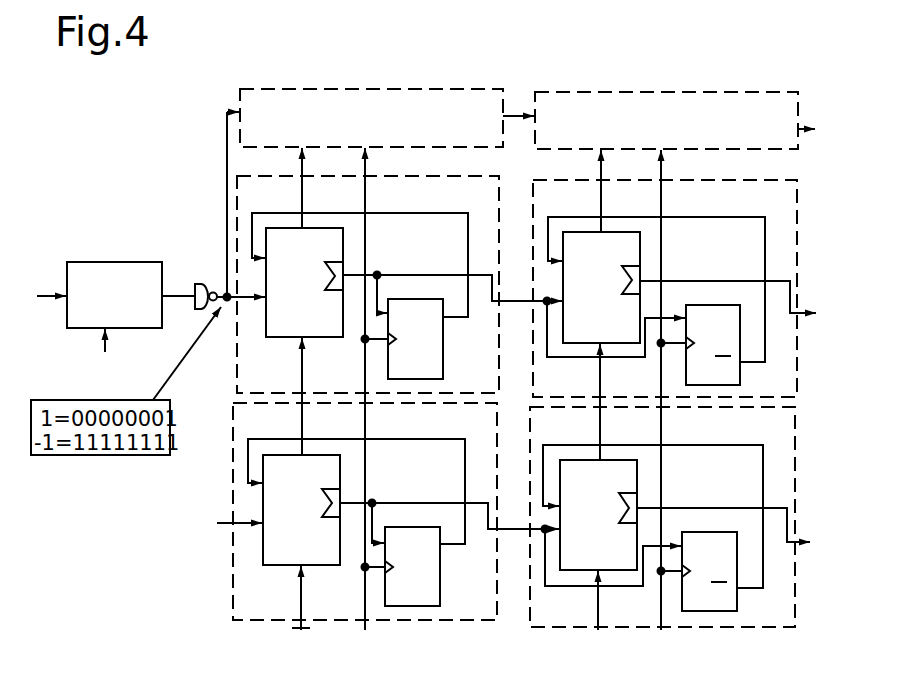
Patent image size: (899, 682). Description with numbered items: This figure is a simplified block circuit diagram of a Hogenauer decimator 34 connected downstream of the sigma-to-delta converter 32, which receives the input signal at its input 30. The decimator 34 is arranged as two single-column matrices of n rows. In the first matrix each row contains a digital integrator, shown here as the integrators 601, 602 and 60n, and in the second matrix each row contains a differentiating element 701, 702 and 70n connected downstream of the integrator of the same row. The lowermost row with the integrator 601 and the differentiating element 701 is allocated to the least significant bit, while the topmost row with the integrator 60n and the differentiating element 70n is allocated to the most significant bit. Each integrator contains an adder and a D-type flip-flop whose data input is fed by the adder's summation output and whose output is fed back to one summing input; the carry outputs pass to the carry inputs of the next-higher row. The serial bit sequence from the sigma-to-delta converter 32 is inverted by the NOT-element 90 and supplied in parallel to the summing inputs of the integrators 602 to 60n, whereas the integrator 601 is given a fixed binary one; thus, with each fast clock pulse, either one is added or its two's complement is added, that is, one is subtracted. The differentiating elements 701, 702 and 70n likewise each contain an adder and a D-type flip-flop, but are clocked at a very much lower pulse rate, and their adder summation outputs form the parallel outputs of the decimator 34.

The input signal line S1 30 is at (45, 297).
The sigma-to-delta converter 32 is at (101, 262).
The decimator 34 is at (528, 78).
The digital integrator 60n is at (239, 88).
The digital integrator 602 is at (237, 205).
The digital integrator 601 is at (232, 593).
The differentiating element 70n is at (800, 150).
The differentiating element 702 is at (808, 362).
The differentiating element 701 is at (808, 598).
The NOT-element 90 is at (200, 284).